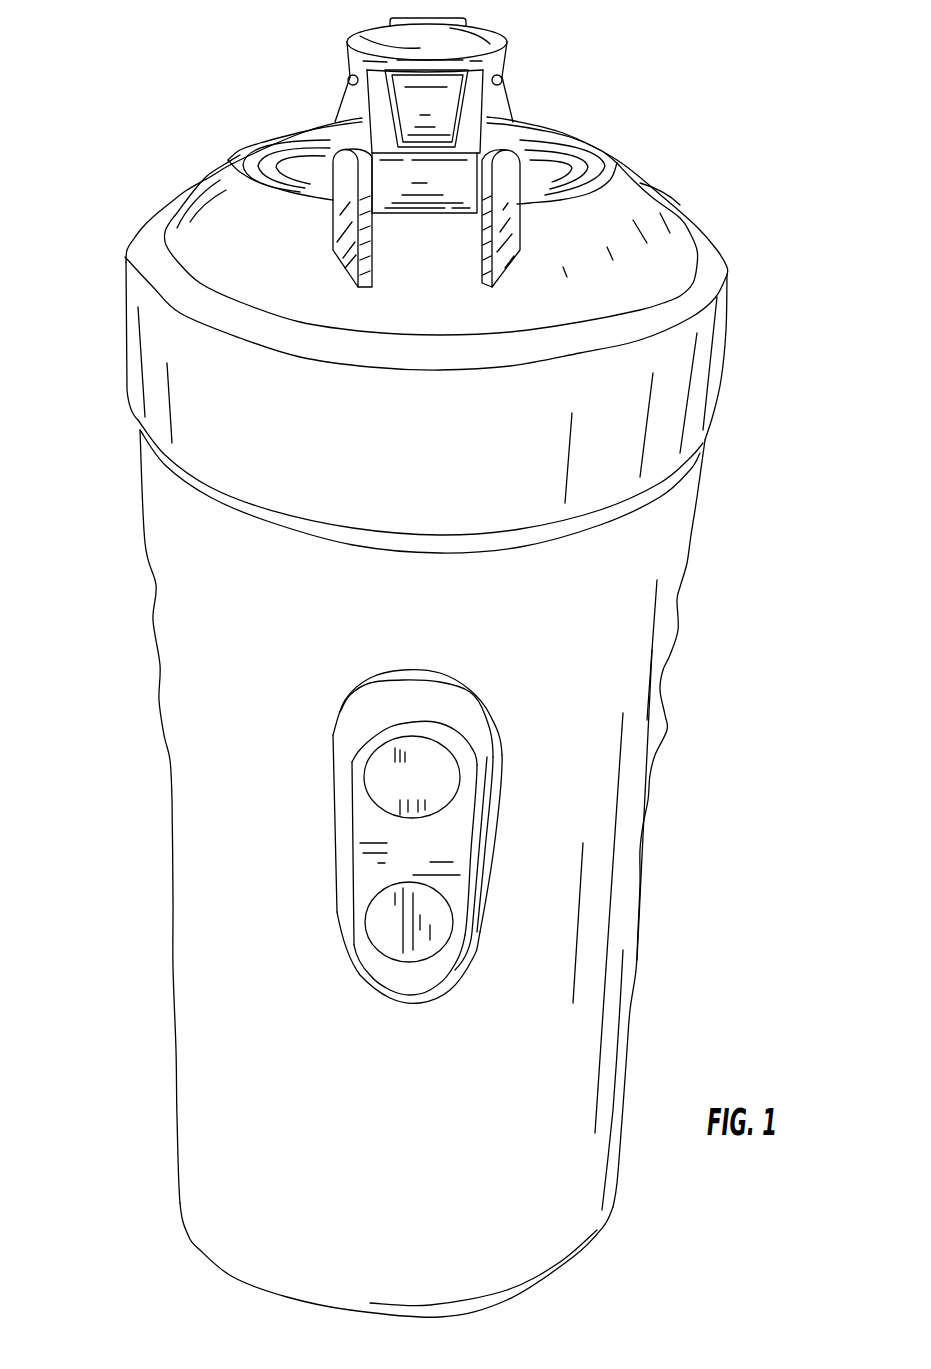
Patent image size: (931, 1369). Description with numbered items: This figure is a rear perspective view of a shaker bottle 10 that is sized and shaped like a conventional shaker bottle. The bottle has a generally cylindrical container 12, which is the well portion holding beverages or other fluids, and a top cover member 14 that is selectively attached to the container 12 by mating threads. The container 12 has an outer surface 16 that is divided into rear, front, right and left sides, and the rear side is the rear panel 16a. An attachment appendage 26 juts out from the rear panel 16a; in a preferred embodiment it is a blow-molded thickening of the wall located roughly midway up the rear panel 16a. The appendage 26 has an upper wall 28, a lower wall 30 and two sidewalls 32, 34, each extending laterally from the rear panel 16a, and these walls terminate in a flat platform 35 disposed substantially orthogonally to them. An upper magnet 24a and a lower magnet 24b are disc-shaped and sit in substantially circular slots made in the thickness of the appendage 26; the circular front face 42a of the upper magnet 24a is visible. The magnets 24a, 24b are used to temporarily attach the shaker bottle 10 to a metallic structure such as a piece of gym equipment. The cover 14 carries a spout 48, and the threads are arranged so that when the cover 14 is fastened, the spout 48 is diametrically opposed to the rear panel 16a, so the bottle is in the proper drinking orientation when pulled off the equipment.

The shaker bottle 10 is at (693, 42).
The container 12 is at (700, 710).
The top cover member 14 is at (700, 373).
The outer surface 16 is at (427, 613).
The rear panel 16a is at (390, 1270).
The upper magnet 24a is at (362, 806).
The lower magnet 24b is at (358, 948).
The attachment appendage 26 is at (327, 723).
The upper wall 28 is at (397, 700).
The lower wall 30 is at (410, 997).
The sidewall 32 is at (483, 858).
The sidewall 34 is at (339, 784).
The platform 35 is at (425, 868).
The circular front face 42a is at (430, 796).
The spout 48 is at (500, 77).